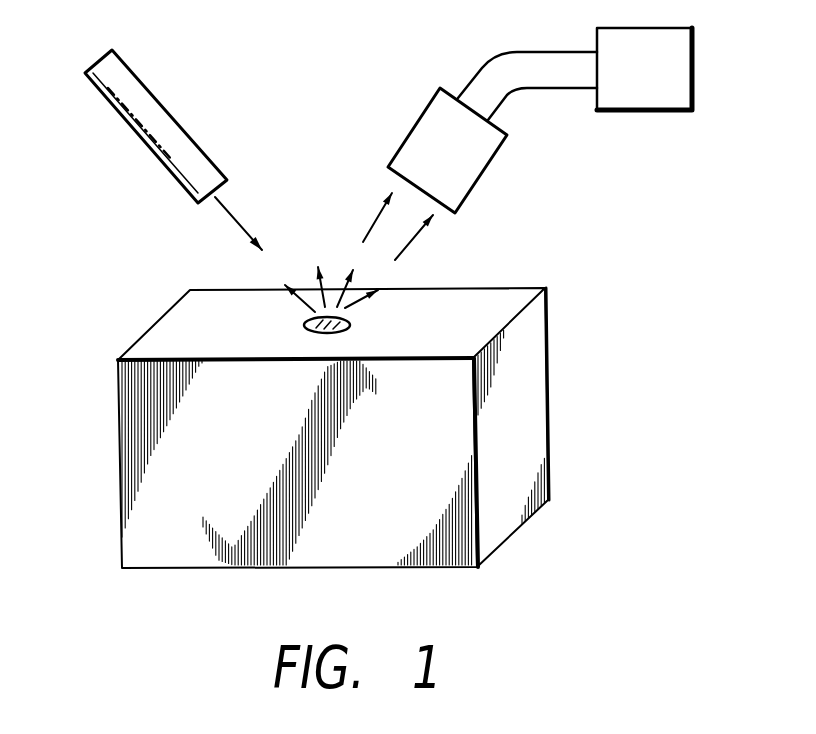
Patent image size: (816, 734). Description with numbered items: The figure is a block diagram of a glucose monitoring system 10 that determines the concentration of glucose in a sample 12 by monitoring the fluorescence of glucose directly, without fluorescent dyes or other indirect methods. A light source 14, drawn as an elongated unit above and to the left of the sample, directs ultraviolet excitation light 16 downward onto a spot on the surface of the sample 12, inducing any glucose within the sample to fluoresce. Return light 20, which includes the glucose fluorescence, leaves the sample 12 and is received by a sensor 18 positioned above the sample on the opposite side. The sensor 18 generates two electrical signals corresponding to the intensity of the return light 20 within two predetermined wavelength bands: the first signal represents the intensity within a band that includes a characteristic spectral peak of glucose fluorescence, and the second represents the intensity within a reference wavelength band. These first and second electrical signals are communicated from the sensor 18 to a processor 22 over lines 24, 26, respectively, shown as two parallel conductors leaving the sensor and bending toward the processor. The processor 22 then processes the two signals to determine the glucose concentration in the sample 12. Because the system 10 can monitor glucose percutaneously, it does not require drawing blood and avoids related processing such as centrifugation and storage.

The glucose monitoring system 10 is at (283, 80).
The sample 12 is at (117, 400).
The light source 14 is at (127, 124).
The ultraviolet excitation light 16 is at (226, 212).
The sensor 18 is at (410, 132).
The return light 20 is at (423, 248).
The processor 22 is at (673, 112).
The line 24 is at (473, 73).
The line 26 is at (532, 92).